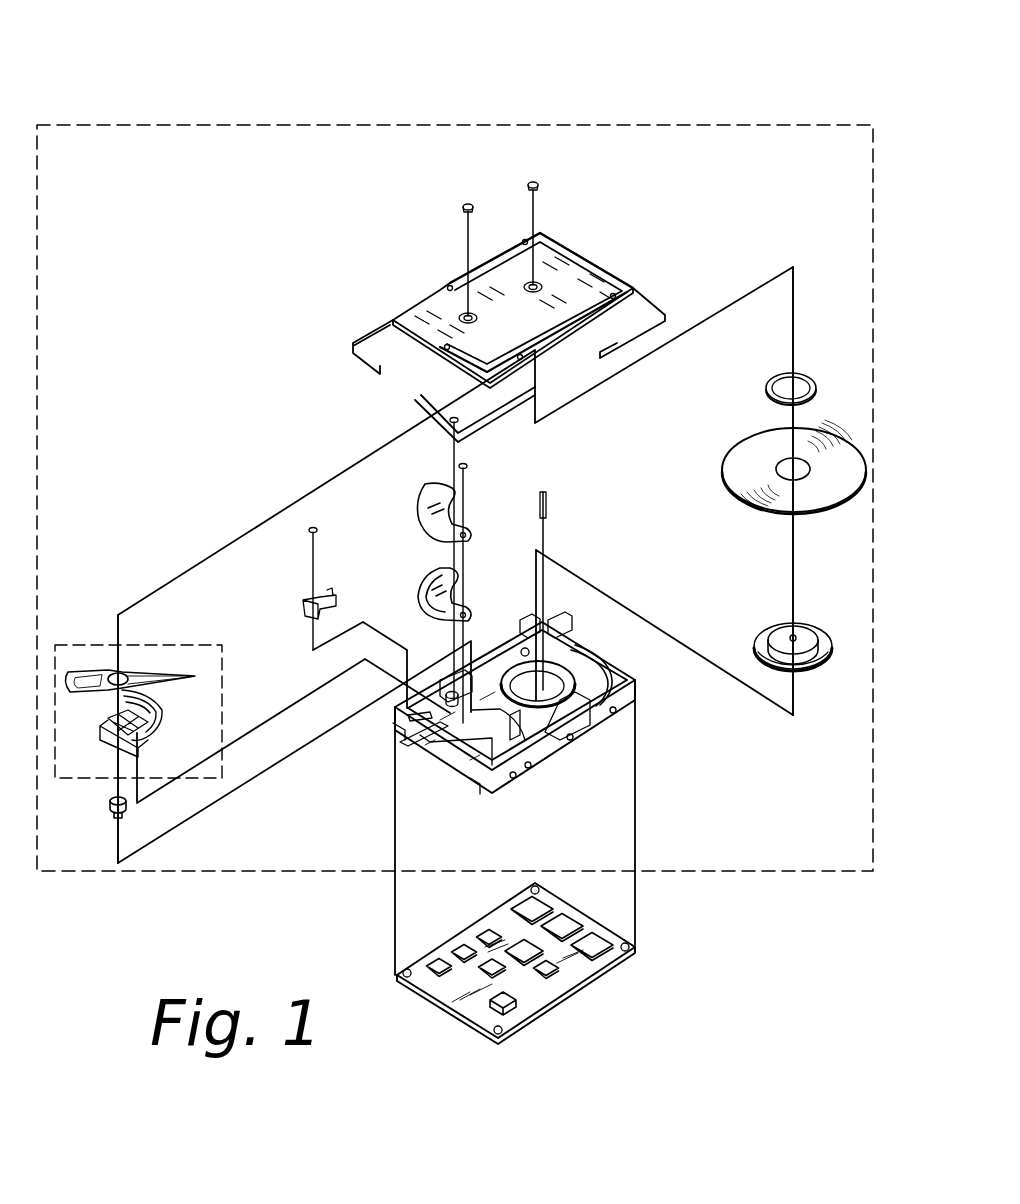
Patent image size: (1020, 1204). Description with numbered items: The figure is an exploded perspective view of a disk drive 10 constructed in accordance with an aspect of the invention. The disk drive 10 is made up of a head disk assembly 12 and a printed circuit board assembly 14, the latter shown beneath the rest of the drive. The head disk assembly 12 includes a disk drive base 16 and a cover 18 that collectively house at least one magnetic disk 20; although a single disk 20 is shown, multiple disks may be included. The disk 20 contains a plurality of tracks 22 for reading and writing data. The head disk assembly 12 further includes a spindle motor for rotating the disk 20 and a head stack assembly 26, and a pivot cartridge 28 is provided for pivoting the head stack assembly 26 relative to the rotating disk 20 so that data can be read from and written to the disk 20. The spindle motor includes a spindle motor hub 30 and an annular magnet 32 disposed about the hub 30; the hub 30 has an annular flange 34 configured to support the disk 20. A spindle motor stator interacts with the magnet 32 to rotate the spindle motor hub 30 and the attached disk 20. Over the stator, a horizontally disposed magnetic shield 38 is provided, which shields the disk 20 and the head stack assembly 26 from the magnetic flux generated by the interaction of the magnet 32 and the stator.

The disk drive 10 is at (332, 88).
The head disk assembly 12 is at (752, 872).
The printed circuit board assembly 14 is at (566, 993).
The disk drive base 16 is at (578, 738).
The cover 18 is at (430, 302).
The magnetic disk 20 is at (751, 458).
The tracks 22 is at (835, 493).
The head stack assembly 26 is at (103, 648).
The pivot cartridge 28 is at (109, 808).
The spindle motor hub 30 is at (806, 633).
The annular magnet 32 is at (806, 673).
The annular flange 34 is at (771, 637).
The magnetic shield 38 is at (590, 668).